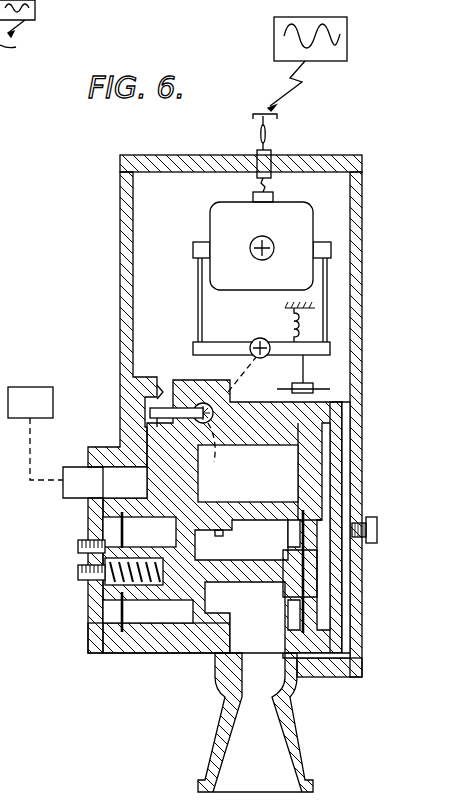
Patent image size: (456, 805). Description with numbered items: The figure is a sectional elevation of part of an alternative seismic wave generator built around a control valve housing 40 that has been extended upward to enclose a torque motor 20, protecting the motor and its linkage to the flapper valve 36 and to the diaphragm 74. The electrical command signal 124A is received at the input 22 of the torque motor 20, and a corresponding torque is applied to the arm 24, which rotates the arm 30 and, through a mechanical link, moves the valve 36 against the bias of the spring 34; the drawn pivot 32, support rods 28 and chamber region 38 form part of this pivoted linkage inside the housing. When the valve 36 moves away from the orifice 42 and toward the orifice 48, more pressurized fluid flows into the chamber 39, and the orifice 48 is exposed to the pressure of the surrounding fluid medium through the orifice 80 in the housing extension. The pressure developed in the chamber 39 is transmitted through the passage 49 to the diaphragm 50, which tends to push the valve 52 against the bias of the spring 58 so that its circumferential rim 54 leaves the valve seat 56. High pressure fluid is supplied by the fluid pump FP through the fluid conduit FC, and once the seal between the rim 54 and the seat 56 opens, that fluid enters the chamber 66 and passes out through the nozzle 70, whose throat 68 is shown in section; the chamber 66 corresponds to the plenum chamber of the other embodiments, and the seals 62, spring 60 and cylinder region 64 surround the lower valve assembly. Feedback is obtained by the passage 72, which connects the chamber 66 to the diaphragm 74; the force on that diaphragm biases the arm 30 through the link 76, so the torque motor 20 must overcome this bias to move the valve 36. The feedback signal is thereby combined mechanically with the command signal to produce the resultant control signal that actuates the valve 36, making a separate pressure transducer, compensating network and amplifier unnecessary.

The torque motor 20 is at (212, 213).
The input 22 is at (260, 137).
The arm 24 is at (328, 244).
The support rod 28 is at (198, 276).
The arm 30 is at (194, 343).
The pivot 32 is at (252, 342).
The spring 34 is at (291, 322).
The valve 36 is at (182, 399).
The valve chamber 38 is at (248, 429).
The chamber 39 is at (155, 404).
The housing 40 is at (364, 241).
The orifice 42 is at (158, 428).
The orifice 48 is at (160, 392).
The passage 49 is at (326, 449).
The diaphragm 50 is at (308, 619).
The valve 52 is at (272, 597).
The circumferential rim 54 is at (208, 608).
The valve seat 56 is at (208, 540).
The spring 58 is at (172, 533).
The spring 60 is at (78, 573).
The seal 62 is at (78, 546).
The cylinder 64 is at (118, 623).
The chamber 66 is at (268, 660).
The nozzle throat 68 is at (270, 696).
The nozzle 70 is at (295, 770).
The passage 72 is at (349, 405).
The diaphragm 74 is at (311, 391).
The link 76 is at (303, 380).
The orifice 80 is at (120, 338).
The command signal 124A is at (347, 25).
The fluid conduit FC is at (70, 500).
The fluid pump FP is at (35, 433).